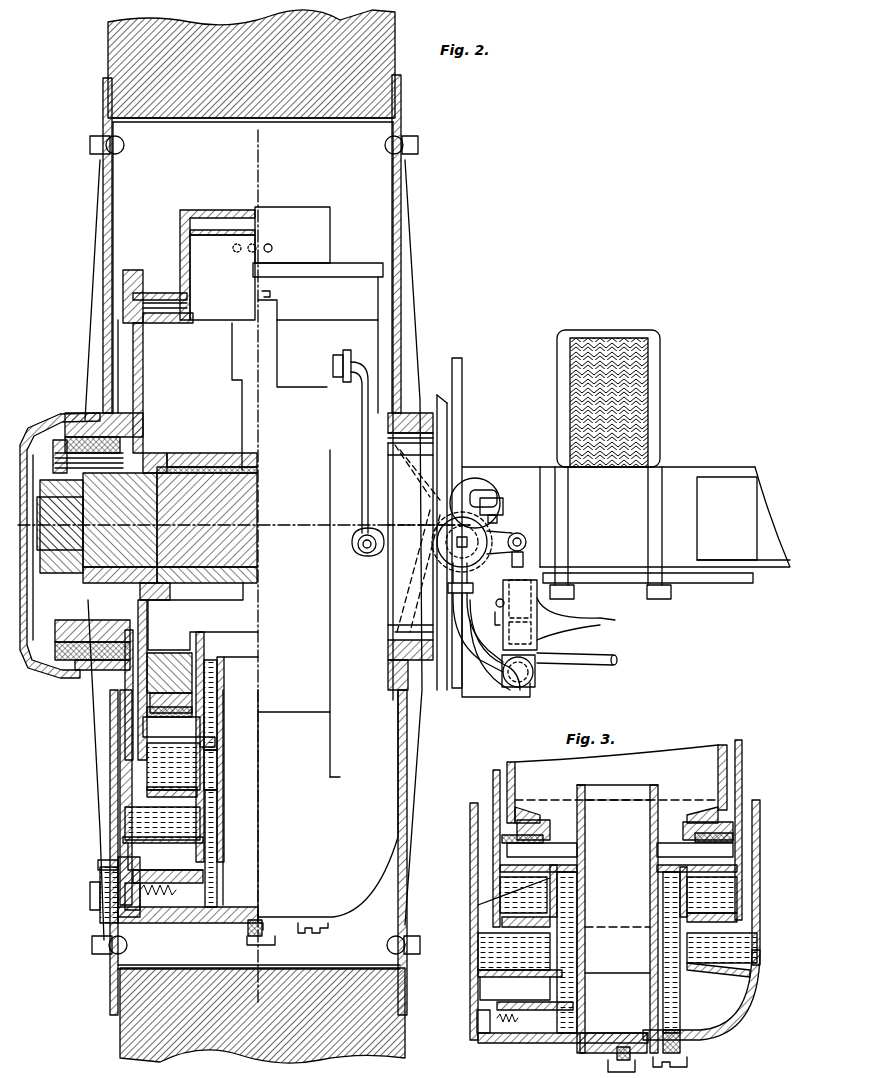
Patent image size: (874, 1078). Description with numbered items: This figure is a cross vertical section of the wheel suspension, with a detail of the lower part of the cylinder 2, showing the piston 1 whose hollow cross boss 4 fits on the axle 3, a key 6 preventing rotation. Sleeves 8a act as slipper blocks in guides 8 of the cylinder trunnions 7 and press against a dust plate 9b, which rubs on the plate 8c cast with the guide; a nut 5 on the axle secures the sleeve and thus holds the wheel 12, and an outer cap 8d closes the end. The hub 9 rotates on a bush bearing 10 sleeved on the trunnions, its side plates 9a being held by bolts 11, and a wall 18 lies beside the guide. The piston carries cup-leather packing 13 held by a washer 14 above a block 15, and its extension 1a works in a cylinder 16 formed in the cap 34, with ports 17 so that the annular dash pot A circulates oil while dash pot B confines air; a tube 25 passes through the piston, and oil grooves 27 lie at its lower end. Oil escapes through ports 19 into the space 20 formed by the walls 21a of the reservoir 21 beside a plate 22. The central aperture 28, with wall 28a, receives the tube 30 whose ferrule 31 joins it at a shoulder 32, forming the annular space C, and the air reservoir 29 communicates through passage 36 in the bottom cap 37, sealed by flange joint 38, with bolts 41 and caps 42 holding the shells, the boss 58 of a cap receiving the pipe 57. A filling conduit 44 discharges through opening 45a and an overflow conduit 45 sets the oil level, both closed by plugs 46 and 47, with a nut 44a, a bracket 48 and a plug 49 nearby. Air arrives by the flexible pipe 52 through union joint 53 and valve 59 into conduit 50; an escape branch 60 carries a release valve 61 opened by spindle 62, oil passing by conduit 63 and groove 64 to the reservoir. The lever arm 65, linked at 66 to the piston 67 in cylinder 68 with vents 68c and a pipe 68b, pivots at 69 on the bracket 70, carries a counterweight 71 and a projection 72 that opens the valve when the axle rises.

In FIG. 2, the piston 1 is at (144, 362).
In FIG. 3, the piston 1 is at (515, 772).
In FIG. 2, the piston extension 1a is at (193, 270).
In FIG. 2, the cylinder 2 is at (134, 386).
In FIG. 3, the cylinder 2 is at (493, 775).
In FIG. 2, the axle 3 is at (220, 578).
In FIG. 2, the hollow cross boss 4 is at (170, 468).
In FIG. 2, the nut 5 is at (75, 573).
In FIG. 2, the key 6 is at (210, 466).
In FIG. 2, the cylinder trunnions 7 is at (66, 446).
In FIG. 2, the guides 8 is at (70, 628).
In FIG. 2, the sleeves 8a is at (108, 580).
In FIG. 2, the plate or disk 8c is at (446, 403).
In FIG. 2, the cap 8d is at (56, 414).
In FIG. 2, the hub or wheel center 9 is at (180, 122).
In FIG. 2, the side plates 9a is at (103, 226).
In FIG. 2, the dust plate 9b is at (463, 366).
In FIG. 2, the bush bearing 10 is at (100, 432).
In FIG. 2, the bolts 11 is at (418, 145).
In FIG. 2, the wheel 12 is at (108, 55).
In FIG. 2, the packing 13 is at (171, 722).
In FIG. 3, the packing 13 is at (542, 850).
In FIG. 2, the washer 14 is at (191, 726).
In FIG. 3, the washer 14 is at (695, 848).
In FIG. 2, the block 15 is at (150, 680).
In FIG. 2, the cylinder 16 is at (330, 230).
In FIG. 2, the ports 17 is at (188, 248).
In FIG. 2, the wall 18 is at (140, 625).
In FIG. 2, the ports 19 is at (128, 634).
In FIG. 2, the space 20 is at (126, 730).
In FIG. 3, the space 20 is at (478, 826).
In FIG. 2, the reservoir 21 is at (172, 843).
In FIG. 3, the reservoir 21 is at (760, 855).
In FIG. 2, the walls 21a is at (122, 772).
In FIG. 3, the walls 21a is at (478, 877).
In FIG. 2, the plate 22 is at (200, 790).
In FIG. 3, the plate 22 is at (660, 916).
In FIG. 2, the tube 25 is at (250, 405).
In FIG. 2, the oil-grooves 27 is at (155, 705).
In FIG. 2, the aperture 28 is at (218, 677).
In FIG. 3, the aperture 28 is at (540, 831).
In FIG. 2, the wall 28a is at (204, 640).
In FIG. 3, the wall 28a is at (695, 822).
In FIG. 2, the air reservoir 29 is at (228, 520).
In FIG. 2, the tube 30 is at (205, 765).
In FIG. 3, the tube 30 is at (685, 872).
In FIG. 2, the ferrule 31 is at (220, 708).
In FIG. 3, the ferrule 31 is at (585, 828).
In FIG. 2, the shoulder 32 is at (205, 741).
In FIG. 3, the shoulder 32 is at (668, 865).
In FIG. 2, the cap 34 is at (143, 270).
In FIG. 2, the passage 36 is at (248, 879).
In FIG. 3, the passage 36 is at (629, 1002).
In FIG. 2, the bottom-cap 37 is at (190, 922).
In FIG. 3, the bottom-cap 37 is at (760, 979).
In FIG. 2, the flange-joint 38 is at (147, 791).
In FIG. 3, the flange-joint 38 is at (742, 916).
In FIG. 2, the bolts 41 is at (266, 294).
In FIG. 2, the caps 42 is at (279, 395).
In FIG. 2, the filling-conduit 44 is at (222, 820).
In FIG. 3, the filling-conduit 44 is at (585, 910).
In FIG. 2, the nut 44a is at (250, 937).
In FIG. 3, the nut 44a is at (610, 1060).
In FIG. 3, the overflow conduit 45 is at (663, 892).
In FIG. 3, the opening 45a is at (501, 896).
In FIG. 2, the screw plug 46 is at (138, 905).
In FIG. 3, the screw plug 46 is at (477, 1020).
In FIG. 2, the screw plug 47 is at (328, 931).
In FIG. 3, the screw plug 47 is at (687, 1062).
In FIG. 2, the bracket 48 is at (104, 863).
In FIG. 2, the plug 49 is at (92, 900).
In FIG. 2, the air duct or conduit 50 is at (402, 561).
In FIG. 2, the flexible air-supply pipe 52 is at (595, 665).
In FIG. 2, the union joint 53 is at (473, 588).
In FIG. 2, the pipe 57 is at (364, 467).
In FIG. 2, the boss 58 is at (335, 378).
In FIG. 2, the valve 59 is at (445, 560).
In FIG. 2, the vent or escape branch 60 is at (497, 490).
In FIG. 2, the air release valve 61 is at (503, 505).
In FIG. 2, the spindle 62 is at (497, 519).
In FIG. 2, the conduit 63 is at (480, 495).
In FIG. 2, the groove 64 is at (400, 598).
In FIG. 2, the lever arm 65 is at (527, 540).
In FIG. 2, the link 66 is at (524, 558).
In FIG. 2, the piston 67 is at (530, 622).
In FIG. 2, the cylinder 68 is at (532, 638).
In FIG. 2, the pipe 68b is at (478, 632).
In FIG. 2, the air vents 68c is at (554, 619).
In FIG. 2, the pivot 69 is at (534, 676).
In FIG. 2, the bracket 70 is at (492, 697).
In FIG. 2, the counterweight 71 is at (436, 535).
In FIG. 2, the projection 72 is at (499, 551).
In FIG. 2, the annular dash pot A is at (180, 306).
In FIG. 2, the dash pot B is at (215, 222).
In FIG. 2, the annular space C is at (173, 766).
In FIG. 3, the annular space C is at (618, 895).